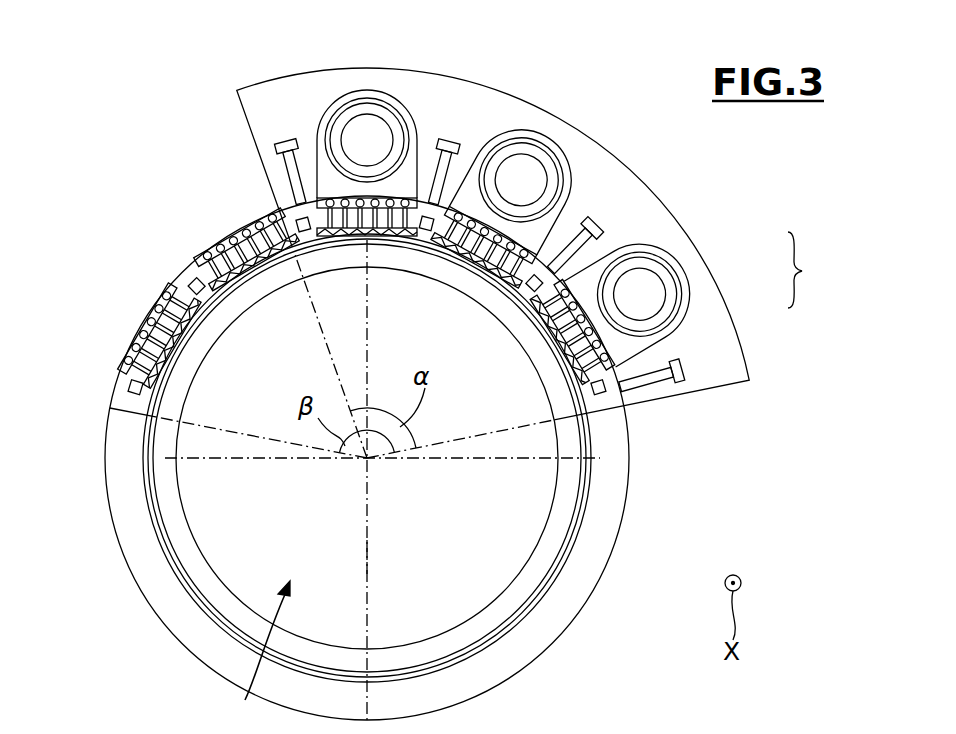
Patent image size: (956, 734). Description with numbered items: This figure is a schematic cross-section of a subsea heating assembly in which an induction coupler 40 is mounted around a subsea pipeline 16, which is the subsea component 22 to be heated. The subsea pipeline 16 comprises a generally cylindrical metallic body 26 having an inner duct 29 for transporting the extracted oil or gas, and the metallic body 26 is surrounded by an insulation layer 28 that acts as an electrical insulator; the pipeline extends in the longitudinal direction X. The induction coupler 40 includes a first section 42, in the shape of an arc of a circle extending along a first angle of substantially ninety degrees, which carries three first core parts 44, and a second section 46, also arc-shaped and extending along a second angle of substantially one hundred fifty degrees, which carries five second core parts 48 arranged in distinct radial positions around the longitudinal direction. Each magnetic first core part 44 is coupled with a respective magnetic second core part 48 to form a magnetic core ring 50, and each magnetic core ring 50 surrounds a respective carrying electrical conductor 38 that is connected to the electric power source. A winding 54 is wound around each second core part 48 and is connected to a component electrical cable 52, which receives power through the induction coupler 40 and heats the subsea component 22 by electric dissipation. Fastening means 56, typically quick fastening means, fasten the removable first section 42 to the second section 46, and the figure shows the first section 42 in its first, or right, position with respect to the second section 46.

The subsea pipeline 16 is at (488, 566).
The subsea component 22 is at (358, 556).
The metallic body 26 is at (576, 512).
The insulation layer 28 is at (567, 600).
The inner duct 29 is at (245, 700).
The carrying electrical conductor 38 is at (367, 140).
The induction coupler 40 is at (102, 172).
The first section 42 is at (276, 111).
The first core part 44 is at (373, 92).
The second section 46 is at (100, 391).
The second core part 48 is at (352, 246).
The magnetic core ring 50 is at (813, 270).
The component electrical cable 52 is at (175, 580).
The winding 54 is at (138, 346).
The fastening means 56 is at (274, 173).